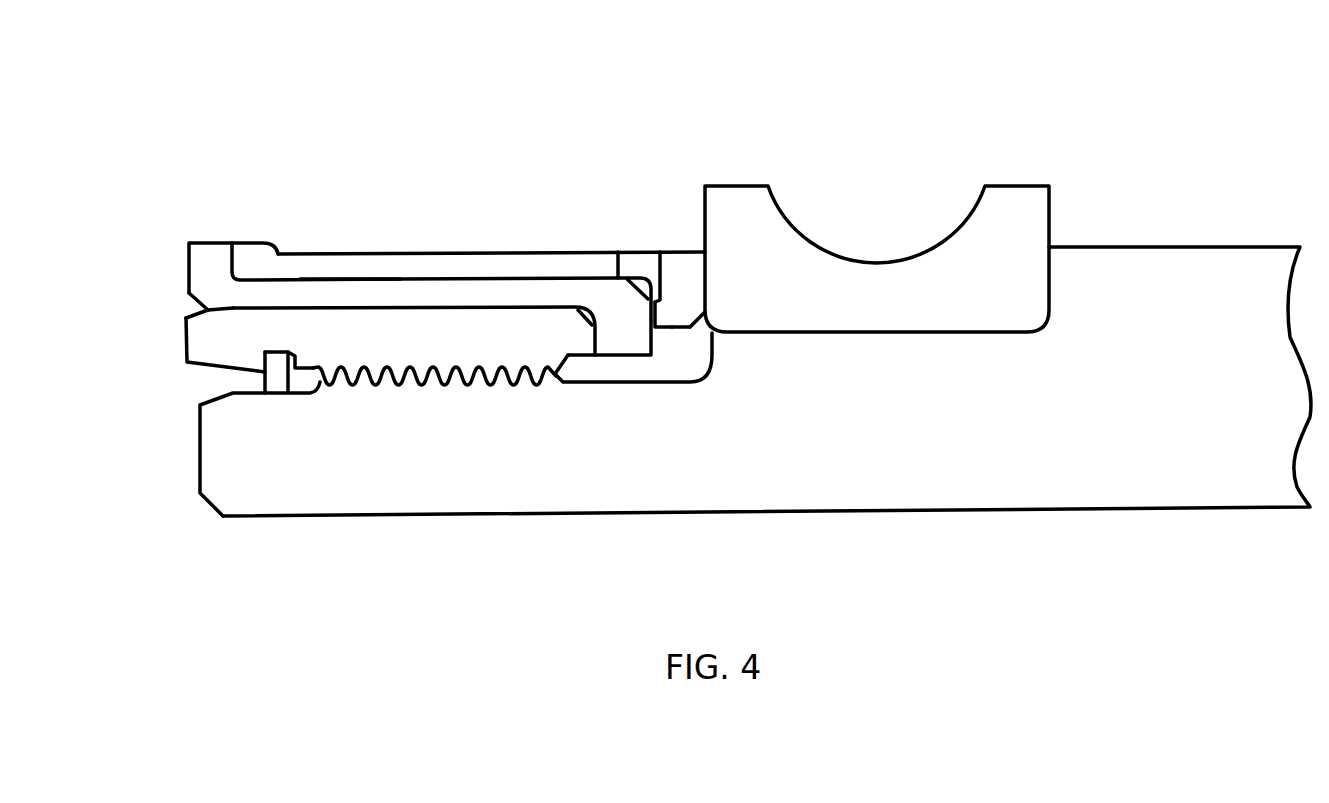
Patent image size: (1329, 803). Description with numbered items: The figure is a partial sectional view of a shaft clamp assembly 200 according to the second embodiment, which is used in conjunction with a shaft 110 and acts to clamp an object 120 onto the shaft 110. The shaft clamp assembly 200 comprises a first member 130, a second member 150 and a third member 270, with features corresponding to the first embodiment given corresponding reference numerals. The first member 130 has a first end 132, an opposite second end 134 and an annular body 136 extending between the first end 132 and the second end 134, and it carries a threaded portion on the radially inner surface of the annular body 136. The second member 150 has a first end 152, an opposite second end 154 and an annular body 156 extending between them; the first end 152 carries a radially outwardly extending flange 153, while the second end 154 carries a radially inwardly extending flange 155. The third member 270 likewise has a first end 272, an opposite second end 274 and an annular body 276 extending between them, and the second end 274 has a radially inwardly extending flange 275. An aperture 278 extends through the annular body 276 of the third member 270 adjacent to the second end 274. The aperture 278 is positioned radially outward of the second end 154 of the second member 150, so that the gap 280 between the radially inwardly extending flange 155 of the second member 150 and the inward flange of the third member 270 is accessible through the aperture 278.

The shaft clamp assembly 200 is at (147, 123).
The shaft 110 is at (1227, 303).
The object 120 is at (1043, 202).
The first member 130 is at (277, 335).
The first end 132 is at (205, 325).
The second end 134 is at (571, 343).
The annular body 136 is at (402, 345).
The second member 150 is at (287, 290).
The first end 152 is at (212, 262).
The radially outwardly extending flange 153 is at (203, 271).
The second end 154 is at (613, 308).
The radially inwardly extending flange 155 is at (615, 343).
The annular body 156 is at (355, 293).
The third member 270 is at (310, 263).
The first end 272 is at (248, 255).
The second end 274 is at (678, 272).
The radially inwardly extending flange 275 is at (682, 303).
The annular body 276 is at (437, 265).
The aperture 278 is at (632, 250).
The gap 280 is at (673, 317).